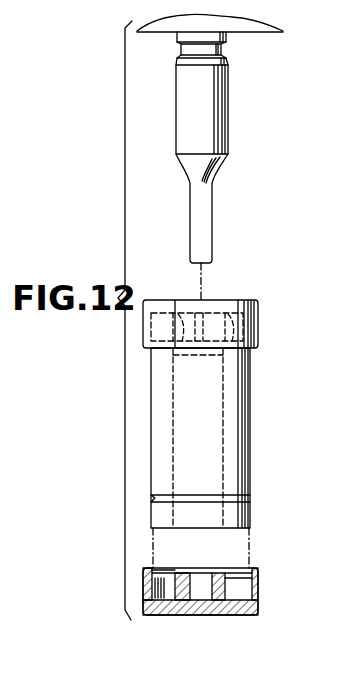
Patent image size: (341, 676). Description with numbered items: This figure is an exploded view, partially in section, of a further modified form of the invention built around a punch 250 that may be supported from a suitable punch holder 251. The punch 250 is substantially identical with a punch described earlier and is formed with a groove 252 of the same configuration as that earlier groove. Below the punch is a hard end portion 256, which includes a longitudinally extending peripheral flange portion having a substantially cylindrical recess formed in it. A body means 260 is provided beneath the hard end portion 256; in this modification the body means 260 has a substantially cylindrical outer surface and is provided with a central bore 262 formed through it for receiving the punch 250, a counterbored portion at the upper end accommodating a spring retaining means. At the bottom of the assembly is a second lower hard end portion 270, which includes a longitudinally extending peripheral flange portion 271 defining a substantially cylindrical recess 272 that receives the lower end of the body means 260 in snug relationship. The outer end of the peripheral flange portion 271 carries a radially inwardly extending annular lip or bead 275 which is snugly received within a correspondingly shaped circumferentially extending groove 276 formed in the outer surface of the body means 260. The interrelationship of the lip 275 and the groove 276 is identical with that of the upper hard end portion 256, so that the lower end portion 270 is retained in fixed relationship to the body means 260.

The punch 250 is at (233, 131).
The punch holder 251 is at (158, 39).
The groove 252 is at (231, 50).
The hard end portion 256 is at (259, 320).
The body means 260 is at (255, 423).
The central bore 262 is at (223, 398).
The circumferentially extending groove 276 is at (251, 498).
The second lower hard end portion 270 is at (258, 617).
The peripheral flange portion 271 is at (257, 600).
The cylindrical recess 272 is at (248, 587).
The annular lip or bead 275 is at (252, 567).